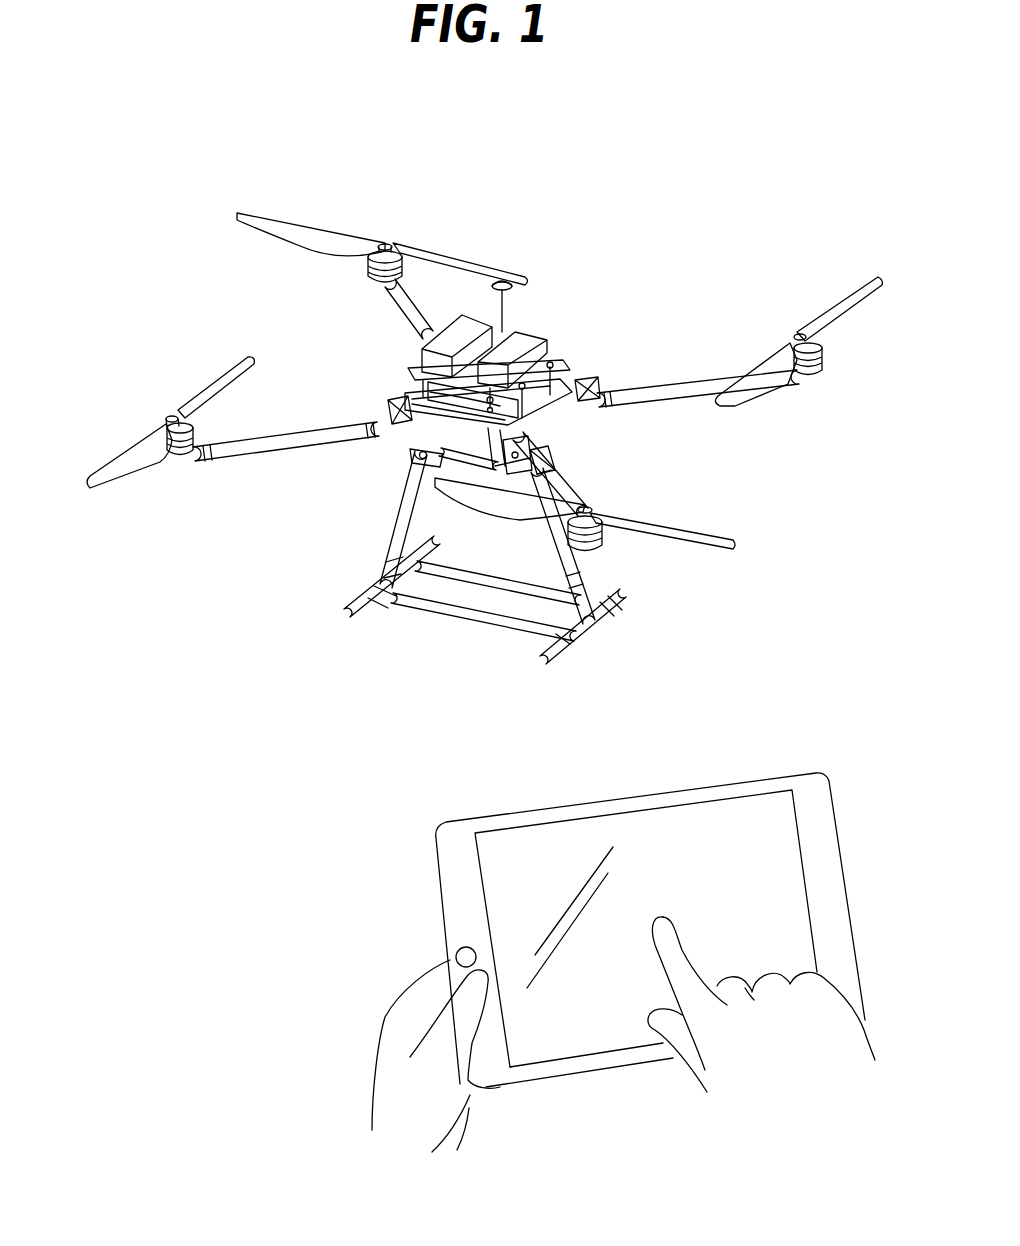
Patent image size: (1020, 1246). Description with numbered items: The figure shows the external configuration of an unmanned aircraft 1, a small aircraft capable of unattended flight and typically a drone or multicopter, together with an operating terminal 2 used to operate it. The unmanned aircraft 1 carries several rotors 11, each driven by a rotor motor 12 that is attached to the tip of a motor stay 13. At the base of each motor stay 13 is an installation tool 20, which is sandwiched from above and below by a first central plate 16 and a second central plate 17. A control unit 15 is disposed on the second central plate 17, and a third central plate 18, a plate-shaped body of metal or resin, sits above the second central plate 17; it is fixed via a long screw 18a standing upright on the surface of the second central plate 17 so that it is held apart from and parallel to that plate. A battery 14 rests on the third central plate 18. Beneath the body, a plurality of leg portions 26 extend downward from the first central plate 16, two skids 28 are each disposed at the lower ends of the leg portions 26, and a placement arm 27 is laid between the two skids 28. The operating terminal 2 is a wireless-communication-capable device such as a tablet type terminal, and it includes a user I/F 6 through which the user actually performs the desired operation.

The unmanned aircraft 1 is at (123, 268).
The operating terminal 2 is at (615, 962).
The user I/F 6 is at (777, 907).
The rotor 11 is at (327, 232).
The rotor motor 12 is at (374, 270).
The motor stay 13 is at (415, 322).
The battery 14 is at (533, 342).
The control unit 15 is at (468, 368).
The first central plate 16 is at (560, 440).
The second central plate 17 is at (472, 440).
The third central plate 18 is at (430, 365).
The long screw 18a is at (565, 380).
The installation tool 20 is at (398, 412).
The leg portions 26 is at (407, 520).
The placement arm 27 is at (423, 610).
The skids 28 is at (362, 617).